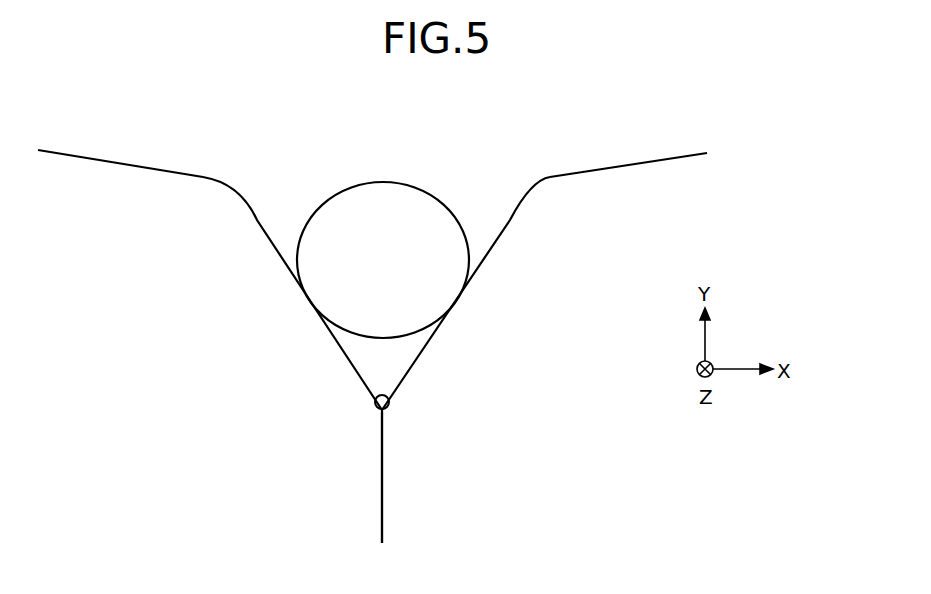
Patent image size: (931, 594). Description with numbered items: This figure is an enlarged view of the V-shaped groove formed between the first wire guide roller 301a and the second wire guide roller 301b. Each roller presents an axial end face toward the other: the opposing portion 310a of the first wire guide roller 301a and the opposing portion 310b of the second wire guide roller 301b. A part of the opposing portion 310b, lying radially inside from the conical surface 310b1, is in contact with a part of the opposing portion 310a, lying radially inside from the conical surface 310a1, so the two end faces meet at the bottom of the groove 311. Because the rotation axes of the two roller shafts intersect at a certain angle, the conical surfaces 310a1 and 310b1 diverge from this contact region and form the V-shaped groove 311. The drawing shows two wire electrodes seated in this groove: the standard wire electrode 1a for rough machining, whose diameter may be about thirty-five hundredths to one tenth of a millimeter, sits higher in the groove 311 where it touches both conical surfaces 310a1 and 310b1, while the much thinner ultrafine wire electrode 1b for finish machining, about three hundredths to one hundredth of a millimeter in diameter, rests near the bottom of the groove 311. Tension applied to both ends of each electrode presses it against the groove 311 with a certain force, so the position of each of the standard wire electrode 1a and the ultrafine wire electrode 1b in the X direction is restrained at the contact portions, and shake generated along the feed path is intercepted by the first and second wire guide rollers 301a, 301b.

The first wire guide roller 301a is at (136, 167).
The second wire guide roller 301b is at (624, 167).
The conical surface 310a1 is at (270, 238).
The conical surface 310b1 is at (497, 238).
The opposing portion 310a is at (382, 463).
The opposing portion 310b is at (382, 463).
The groove 311 is at (384, 253).
The standard wire electrode 1a is at (384, 182).
The ultrafine wire electrode 1b is at (389, 398).